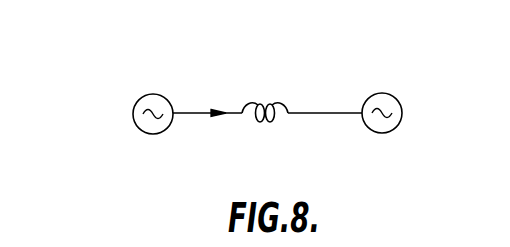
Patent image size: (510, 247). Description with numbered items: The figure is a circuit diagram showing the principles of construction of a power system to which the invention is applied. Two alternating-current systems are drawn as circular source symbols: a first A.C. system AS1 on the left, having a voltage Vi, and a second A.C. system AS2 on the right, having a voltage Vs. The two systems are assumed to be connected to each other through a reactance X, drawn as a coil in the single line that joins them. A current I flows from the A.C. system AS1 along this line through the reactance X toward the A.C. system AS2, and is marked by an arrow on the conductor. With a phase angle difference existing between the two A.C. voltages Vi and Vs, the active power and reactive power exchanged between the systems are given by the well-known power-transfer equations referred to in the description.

The A.C. system AS1 is at (153, 94).
The A.C. system AS2 is at (386, 94).
The reactance X is at (265, 99).
The current I is at (218, 126).
The voltage Vi is at (146, 154).
The voltage Vs is at (378, 152).